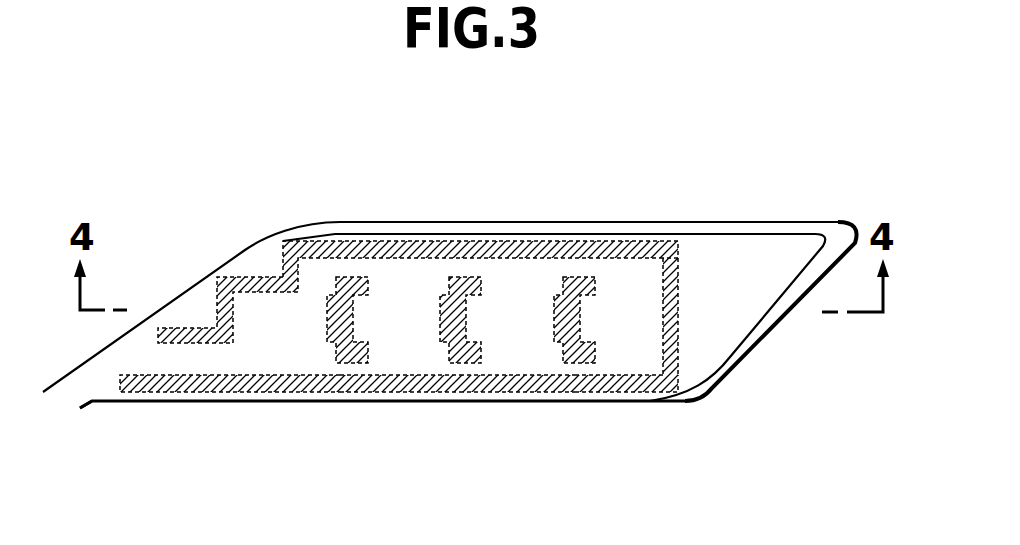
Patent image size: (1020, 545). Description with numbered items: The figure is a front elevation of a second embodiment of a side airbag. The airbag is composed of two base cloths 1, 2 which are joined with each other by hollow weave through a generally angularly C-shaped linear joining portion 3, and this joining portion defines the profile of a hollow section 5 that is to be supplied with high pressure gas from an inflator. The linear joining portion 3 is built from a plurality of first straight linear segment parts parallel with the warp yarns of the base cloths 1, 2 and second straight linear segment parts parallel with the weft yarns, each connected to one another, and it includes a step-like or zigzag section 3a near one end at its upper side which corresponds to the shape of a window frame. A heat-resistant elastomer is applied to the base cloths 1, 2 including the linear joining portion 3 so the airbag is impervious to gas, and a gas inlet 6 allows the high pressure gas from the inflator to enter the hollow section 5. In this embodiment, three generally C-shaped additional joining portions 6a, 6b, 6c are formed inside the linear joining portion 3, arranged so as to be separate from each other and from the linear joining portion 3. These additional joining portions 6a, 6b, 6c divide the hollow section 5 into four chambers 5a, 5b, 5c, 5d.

The base cloth 1 is at (757, 233).
The base cloth 2 is at (663, 222).
The linear joining portion 3 is at (688, 330).
The step-like section 3a is at (250, 277).
The hollow section 5 is at (410, 272).
The chamber 5a is at (260, 353).
The chamber 5b is at (400, 353).
The chamber 5c is at (515, 353).
The chamber 5d is at (637, 353).
The gas inlet 6 is at (68, 394).
The additional joining portion 6a is at (342, 353).
The additional joining portion 6b is at (467, 353).
The additional joining portion 6c is at (580, 353).